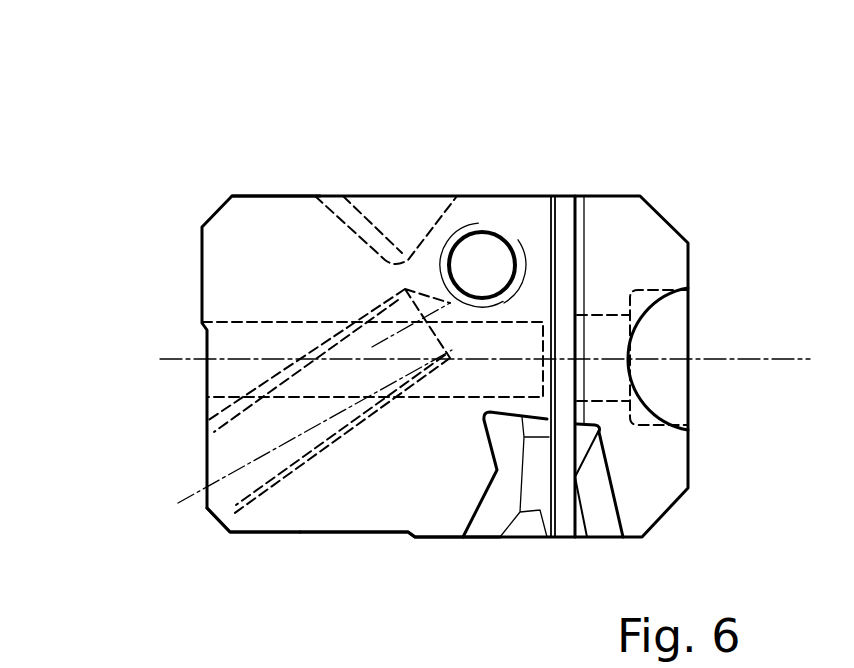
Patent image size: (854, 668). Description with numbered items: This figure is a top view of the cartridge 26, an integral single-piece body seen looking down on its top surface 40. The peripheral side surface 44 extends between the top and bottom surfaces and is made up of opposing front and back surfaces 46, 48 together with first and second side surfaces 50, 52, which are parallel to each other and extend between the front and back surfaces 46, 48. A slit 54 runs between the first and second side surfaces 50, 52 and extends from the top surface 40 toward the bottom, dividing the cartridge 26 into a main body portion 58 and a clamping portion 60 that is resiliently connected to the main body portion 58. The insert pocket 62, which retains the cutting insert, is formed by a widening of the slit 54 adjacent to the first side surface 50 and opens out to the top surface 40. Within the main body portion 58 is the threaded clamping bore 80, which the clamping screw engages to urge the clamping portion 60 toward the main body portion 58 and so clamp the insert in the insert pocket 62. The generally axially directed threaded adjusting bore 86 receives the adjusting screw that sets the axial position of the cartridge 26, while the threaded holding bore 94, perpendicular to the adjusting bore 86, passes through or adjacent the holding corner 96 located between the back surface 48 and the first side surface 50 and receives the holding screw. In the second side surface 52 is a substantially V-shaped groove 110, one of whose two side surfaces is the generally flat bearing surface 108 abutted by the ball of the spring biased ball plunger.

The cartridge 26 is at (150, 197).
The top surface 40 is at (273, 218).
The peripheral side surface 44 is at (513, 190).
The front surface 46 is at (690, 264).
The back surface 48 is at (207, 379).
The first side surface 50 is at (353, 531).
The second side surface 52 is at (463, 215).
The slit 54 is at (567, 193).
The main body portion 58 is at (345, 502).
The clamping portion 60 is at (660, 473).
The insert pocket 62 is at (538, 515).
The threaded clamping bore 80 is at (450, 398).
The threaded adjusting bore 86 is at (466, 250).
The threaded holding bore 94 is at (240, 430).
The holding corner 96 is at (227, 511).
The bearing surface 108 is at (360, 213).
The V-shaped groove 110 is at (398, 210).